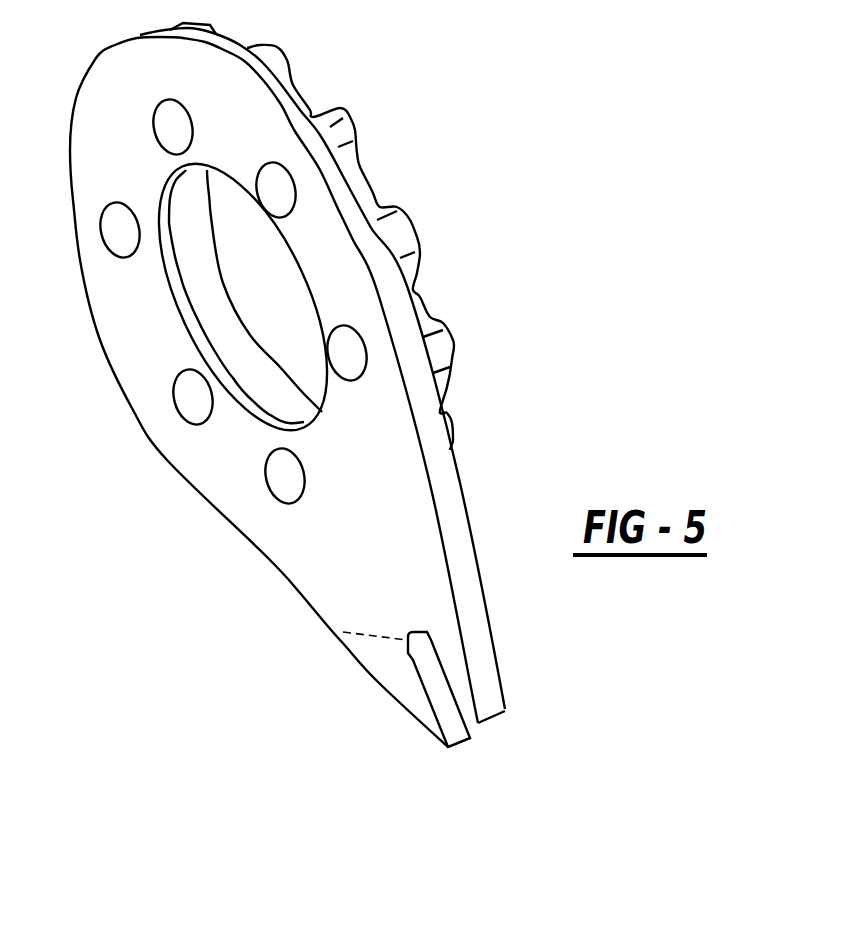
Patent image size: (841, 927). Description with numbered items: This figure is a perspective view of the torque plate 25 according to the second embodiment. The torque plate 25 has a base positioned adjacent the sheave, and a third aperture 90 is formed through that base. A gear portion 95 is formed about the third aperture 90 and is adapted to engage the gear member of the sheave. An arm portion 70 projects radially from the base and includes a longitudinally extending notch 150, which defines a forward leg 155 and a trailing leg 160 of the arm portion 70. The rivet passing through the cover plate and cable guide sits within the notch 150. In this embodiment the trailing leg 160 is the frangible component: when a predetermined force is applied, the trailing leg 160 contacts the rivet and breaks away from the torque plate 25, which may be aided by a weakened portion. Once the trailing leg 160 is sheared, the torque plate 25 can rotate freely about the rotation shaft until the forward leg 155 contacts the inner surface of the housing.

The torque plate 25 is at (380, 497).
The gear portion 95 is at (337, 121).
The third aperture 90 is at (230, 307).
The arm portion 70 is at (413, 610).
The forward leg 155 is at (467, 668).
The longitudinally extending notch 150 is at (453, 708).
The trailing leg 160 is at (402, 680).